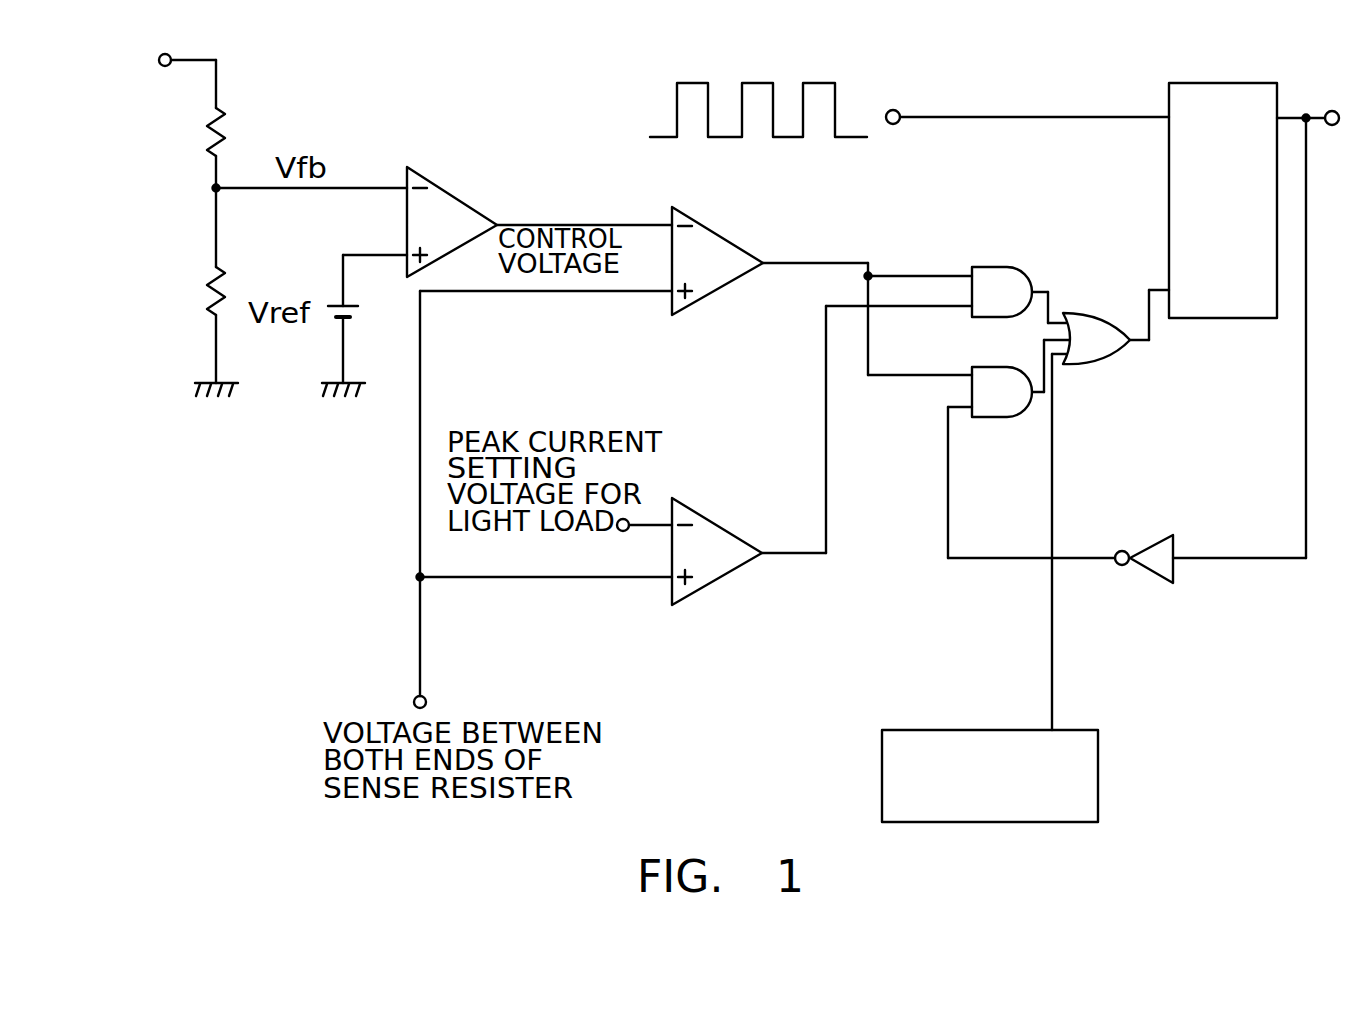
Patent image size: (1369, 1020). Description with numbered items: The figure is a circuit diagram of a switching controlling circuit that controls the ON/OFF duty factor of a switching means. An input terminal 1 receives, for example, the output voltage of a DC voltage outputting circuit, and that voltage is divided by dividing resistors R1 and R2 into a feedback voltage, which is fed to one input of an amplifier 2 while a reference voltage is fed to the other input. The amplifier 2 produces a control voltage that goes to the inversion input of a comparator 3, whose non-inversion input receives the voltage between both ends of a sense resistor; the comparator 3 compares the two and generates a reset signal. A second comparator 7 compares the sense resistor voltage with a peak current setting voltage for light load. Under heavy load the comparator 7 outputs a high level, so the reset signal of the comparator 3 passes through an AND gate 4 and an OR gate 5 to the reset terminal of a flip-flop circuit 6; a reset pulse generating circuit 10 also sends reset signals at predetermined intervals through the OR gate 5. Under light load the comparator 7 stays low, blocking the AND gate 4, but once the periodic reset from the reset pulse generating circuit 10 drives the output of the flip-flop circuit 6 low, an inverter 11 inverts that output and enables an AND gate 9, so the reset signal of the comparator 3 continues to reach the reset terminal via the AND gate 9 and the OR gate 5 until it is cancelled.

The input terminal 1 is at (171, 56).
The dividing resistor R1 is at (207, 129).
The dividing resistor R2 is at (207, 287).
The amplifier 2 is at (443, 187).
The comparator 3 is at (716, 228).
The AND gate 4 is at (990, 266).
The OR gate 5 is at (1094, 313).
The flip-flop circuit 6 is at (1225, 83).
The comparator 7 is at (712, 518).
The AND gate 9 is at (993, 417).
The reset pulse generating circuit 10 is at (958, 730).
The inverter 11 is at (1160, 542).